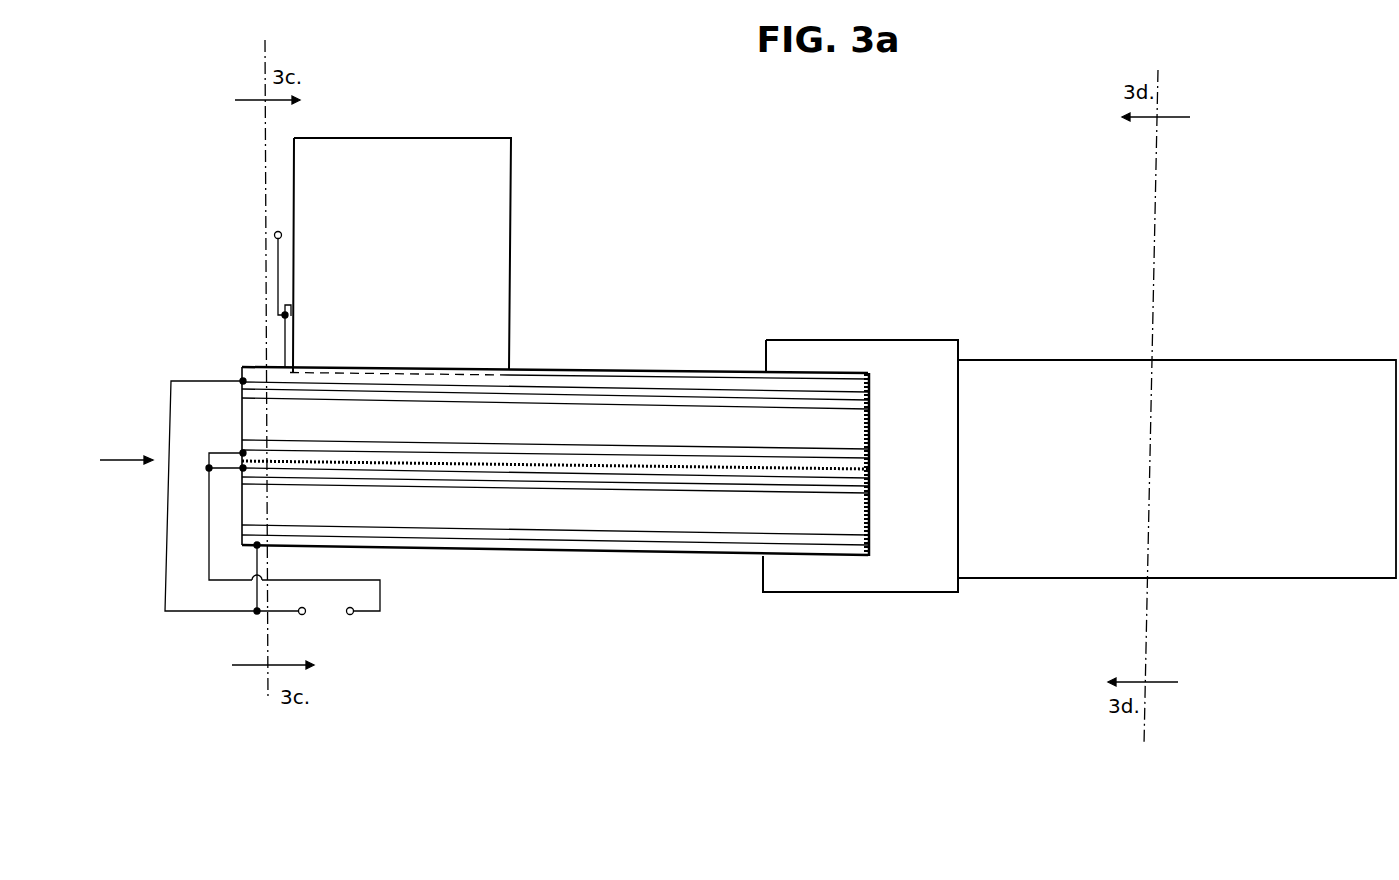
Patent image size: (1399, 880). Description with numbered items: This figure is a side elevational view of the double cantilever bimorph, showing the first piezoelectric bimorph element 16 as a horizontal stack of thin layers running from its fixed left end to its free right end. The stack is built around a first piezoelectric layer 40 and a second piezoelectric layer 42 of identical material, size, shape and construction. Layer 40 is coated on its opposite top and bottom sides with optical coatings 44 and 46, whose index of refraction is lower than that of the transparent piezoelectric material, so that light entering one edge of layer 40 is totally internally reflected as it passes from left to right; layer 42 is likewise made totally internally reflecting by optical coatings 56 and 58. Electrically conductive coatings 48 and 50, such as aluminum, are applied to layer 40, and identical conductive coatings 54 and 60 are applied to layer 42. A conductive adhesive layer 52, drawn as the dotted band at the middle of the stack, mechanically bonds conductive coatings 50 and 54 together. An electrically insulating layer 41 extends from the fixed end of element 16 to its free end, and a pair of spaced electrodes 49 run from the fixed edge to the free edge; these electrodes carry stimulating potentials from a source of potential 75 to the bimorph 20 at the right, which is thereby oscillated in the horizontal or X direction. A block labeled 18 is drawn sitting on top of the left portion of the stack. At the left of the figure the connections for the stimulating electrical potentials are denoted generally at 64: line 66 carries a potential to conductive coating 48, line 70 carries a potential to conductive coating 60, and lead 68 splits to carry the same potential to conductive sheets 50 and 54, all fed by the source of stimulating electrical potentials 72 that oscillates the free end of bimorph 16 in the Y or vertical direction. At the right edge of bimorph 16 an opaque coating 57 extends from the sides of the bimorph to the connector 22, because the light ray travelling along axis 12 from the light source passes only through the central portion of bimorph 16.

The axis 12 is at (120, 456).
The first piezoelectric bimorph element 16 is at (554, 562).
The input coupling block 18 is at (401, 232).
The bimorph 20 is at (1281, 361).
The connector 22 is at (900, 360).
The first piezoelectric layer 40 is at (418, 432).
The electrically insulating layer 41 is at (545, 382).
The piezoelectric layer 42 is at (418, 517).
The optical coating 44 is at (732, 406).
The optical coating 46 is at (568, 446).
The electrically conductive coating 48 is at (680, 397).
The spaced electrodes 49 is at (633, 377).
The electrically conductive coating 50 is at (620, 457).
The conductive adhesive layer 52 is at (795, 468).
The electrically conductive coating 54 is at (690, 480).
The optical coating 56 is at (752, 490).
The opaque coating 57 is at (873, 431).
The optical coating 58 is at (627, 546).
The electrically conductive coating 60 is at (690, 551).
The connections for stimulating electrical potentials 64 is at (164, 372).
The line 66 is at (211, 381).
The lead 68 is at (209, 531).
The line 70 is at (252, 578).
The source of stimulating electrical potentials 72 is at (342, 626).
The source of potential 75 is at (274, 235).